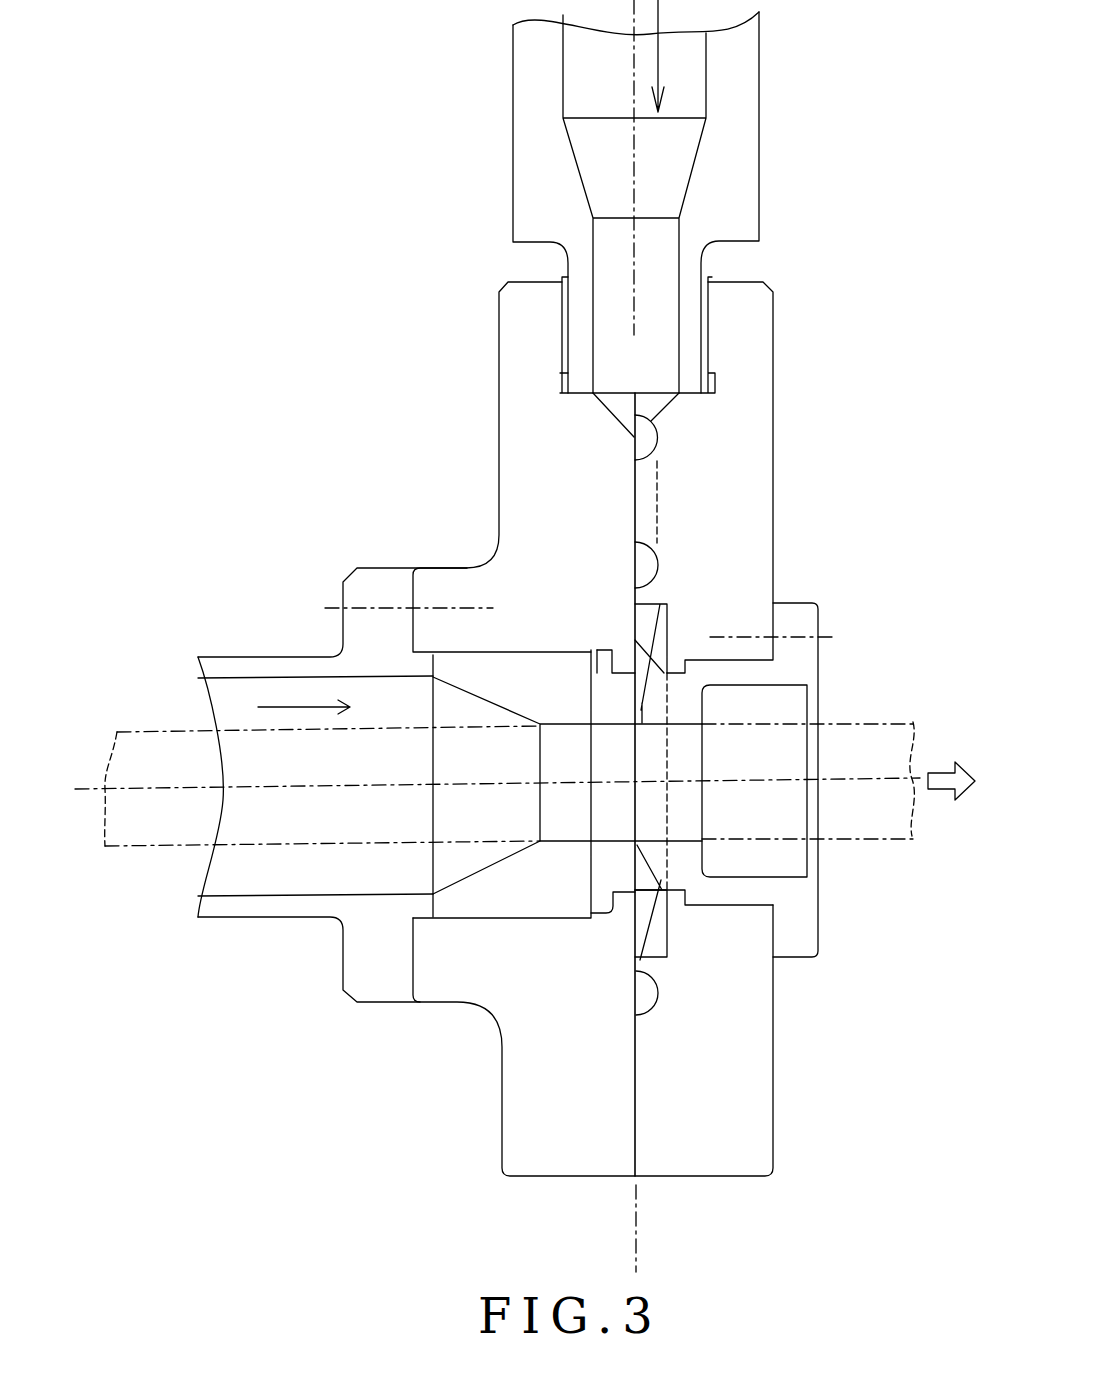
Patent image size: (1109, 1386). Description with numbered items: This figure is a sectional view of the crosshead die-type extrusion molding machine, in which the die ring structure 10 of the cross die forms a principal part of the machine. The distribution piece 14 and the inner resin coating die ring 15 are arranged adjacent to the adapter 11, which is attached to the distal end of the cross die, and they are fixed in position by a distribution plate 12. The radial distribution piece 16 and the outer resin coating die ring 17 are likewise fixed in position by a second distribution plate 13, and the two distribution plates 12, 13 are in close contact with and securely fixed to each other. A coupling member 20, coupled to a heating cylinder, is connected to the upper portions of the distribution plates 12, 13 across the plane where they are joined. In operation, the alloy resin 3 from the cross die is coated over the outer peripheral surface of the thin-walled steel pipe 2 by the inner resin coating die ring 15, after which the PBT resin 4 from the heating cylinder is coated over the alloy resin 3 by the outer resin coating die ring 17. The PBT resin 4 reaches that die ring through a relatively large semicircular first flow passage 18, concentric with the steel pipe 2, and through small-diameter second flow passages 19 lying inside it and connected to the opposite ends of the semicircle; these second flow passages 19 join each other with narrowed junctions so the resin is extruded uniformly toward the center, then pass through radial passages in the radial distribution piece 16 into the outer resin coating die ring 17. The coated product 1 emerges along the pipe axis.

The output shaft 1 is at (870, 728).
The thin-walled steel pipe 2 is at (143, 828).
The alloy resin 3 is at (321, 711).
The PBT resin 4 is at (669, 56).
The die ring structure 10 is at (331, 431).
The adapter 11 is at (273, 903).
The distribution plate 12 is at (520, 368).
The distribution plate 13 is at (752, 352).
The distribution piece 14 is at (532, 890).
The inner resin coating die ring 15 is at (607, 870).
The radial distribution piece 16 is at (657, 645).
The outer resin coating die ring 17 is at (797, 923).
The first flow passage 18 is at (648, 440).
The second flow passages 19 is at (650, 566).
The coupling member 20 is at (528, 122).